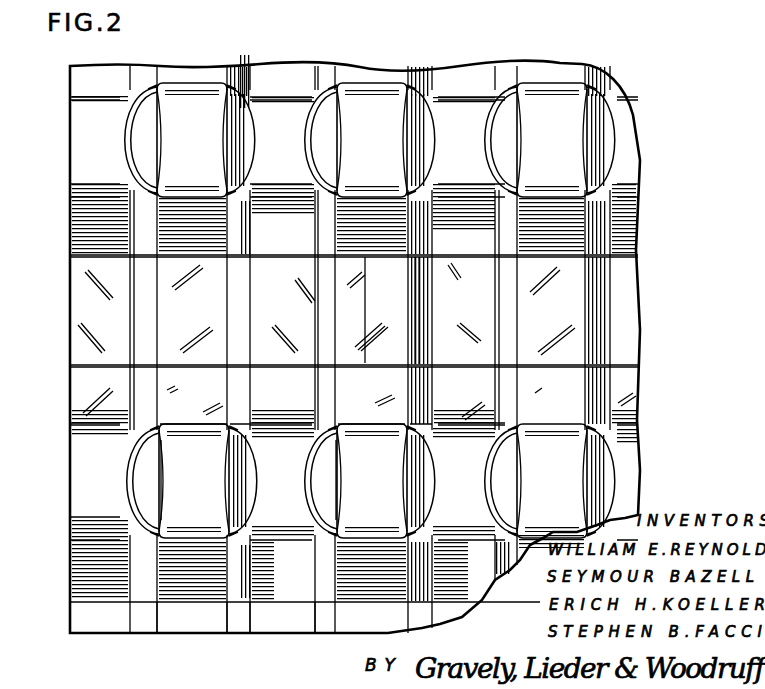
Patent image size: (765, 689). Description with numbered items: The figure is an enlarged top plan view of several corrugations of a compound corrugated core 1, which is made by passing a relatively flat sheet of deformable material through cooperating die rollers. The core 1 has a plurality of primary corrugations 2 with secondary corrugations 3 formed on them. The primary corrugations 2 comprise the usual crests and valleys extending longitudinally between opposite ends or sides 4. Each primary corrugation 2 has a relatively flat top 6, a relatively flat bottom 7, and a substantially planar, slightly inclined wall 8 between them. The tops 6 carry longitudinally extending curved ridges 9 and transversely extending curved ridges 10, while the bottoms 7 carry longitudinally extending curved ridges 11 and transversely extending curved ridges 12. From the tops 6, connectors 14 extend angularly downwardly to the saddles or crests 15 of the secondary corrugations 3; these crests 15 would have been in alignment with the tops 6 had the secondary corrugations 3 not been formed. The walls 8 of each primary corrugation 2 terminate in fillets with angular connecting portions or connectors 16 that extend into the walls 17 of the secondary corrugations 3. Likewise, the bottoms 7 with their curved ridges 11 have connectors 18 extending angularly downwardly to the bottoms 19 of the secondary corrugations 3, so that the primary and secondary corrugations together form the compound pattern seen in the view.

The core 1 is at (663, 289).
The primary corrugations 2 is at (193, 622).
The secondary corrugations 3 is at (280, 625).
The ends or sides 4 is at (70, 314).
The top 6 is at (559, 485).
The bottom 7 is at (559, 319).
The wall 8 is at (378, 589).
The longitudinally extending curved ridges 9 is at (402, 494).
The transversely extending curved ridges 10 is at (363, 538).
The longitudinally extending curved ridges 11 is at (412, 308).
The transversely extending curved ridges 12 is at (365, 366).
The connectors 14 is at (445, 463).
The crests 15 is at (287, 505).
The connectors 16 is at (420, 411).
The walls 17 is at (288, 579).
The connectors 18 is at (431, 312).
The bottoms 19 is at (285, 294).